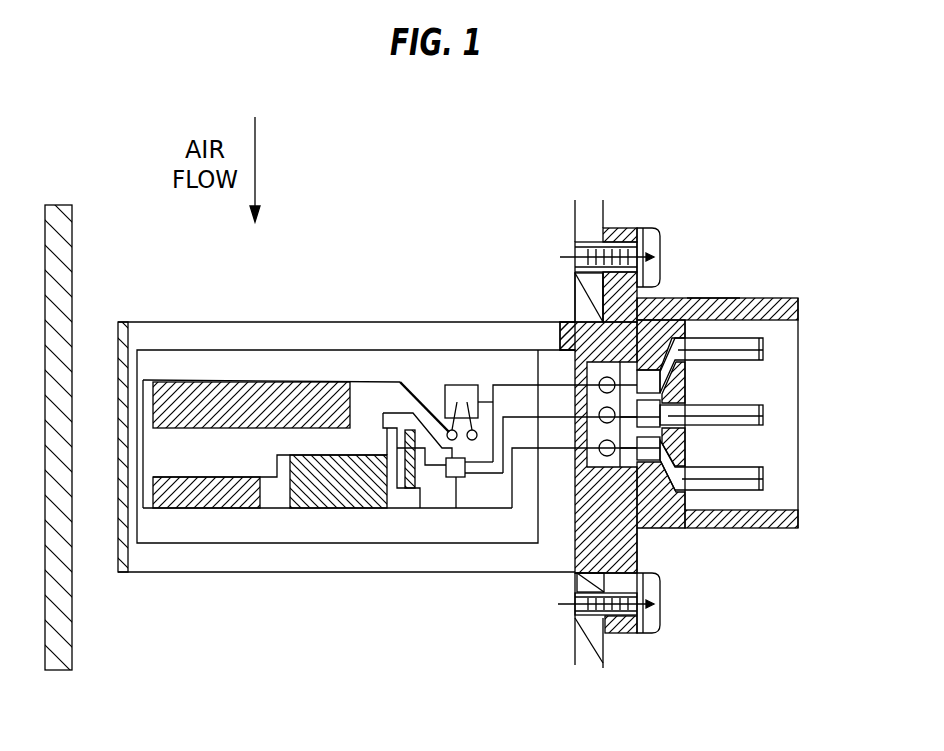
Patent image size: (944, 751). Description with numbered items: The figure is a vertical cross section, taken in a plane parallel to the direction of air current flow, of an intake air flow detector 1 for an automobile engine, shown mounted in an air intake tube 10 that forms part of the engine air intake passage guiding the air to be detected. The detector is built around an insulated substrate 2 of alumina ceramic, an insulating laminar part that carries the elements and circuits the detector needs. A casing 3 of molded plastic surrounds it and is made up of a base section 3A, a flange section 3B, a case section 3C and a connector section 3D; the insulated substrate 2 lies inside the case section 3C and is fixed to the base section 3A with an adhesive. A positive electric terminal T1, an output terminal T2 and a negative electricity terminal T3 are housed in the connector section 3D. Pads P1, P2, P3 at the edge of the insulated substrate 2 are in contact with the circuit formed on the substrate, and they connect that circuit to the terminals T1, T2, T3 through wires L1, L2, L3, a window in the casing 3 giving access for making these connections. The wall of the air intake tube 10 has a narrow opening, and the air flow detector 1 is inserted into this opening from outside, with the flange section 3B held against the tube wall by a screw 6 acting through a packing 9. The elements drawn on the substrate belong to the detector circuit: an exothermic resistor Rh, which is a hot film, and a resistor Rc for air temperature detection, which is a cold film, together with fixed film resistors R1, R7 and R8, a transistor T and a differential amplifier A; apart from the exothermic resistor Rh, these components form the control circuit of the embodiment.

The intake air flow detector 1 is at (437, 232).
The insulated substrate 2 is at (214, 368).
The casing 3 is at (496, 582).
The base section 3A is at (660, 298).
The flange section 3B is at (640, 562).
The case section 3C is at (128, 565).
The connector section 3D is at (793, 298).
The screw 6 is at (661, 249).
The packing 9 is at (604, 222).
The air intake tube 10 is at (72, 298).
The resistor for air temperature detection Rc is at (308, 388).
The exothermic resistor Rh is at (200, 500).
The fixed film resistor R1 is at (320, 500).
The fixed film resistor R7 is at (407, 490).
The fixed film resistor R8 is at (412, 432).
The transistor T is at (457, 395).
The differential amplifier A is at (449, 480).
The pad P1 is at (597, 385).
The pad P2 is at (597, 413).
The pad P3 is at (590, 449).
The wire L1 is at (690, 298).
The wire L2 is at (660, 400).
The wire L3 is at (627, 452).
The positive electric terminal T1 is at (768, 350).
The output terminal T2 is at (766, 418).
The negative electricity terminal T3 is at (766, 485).